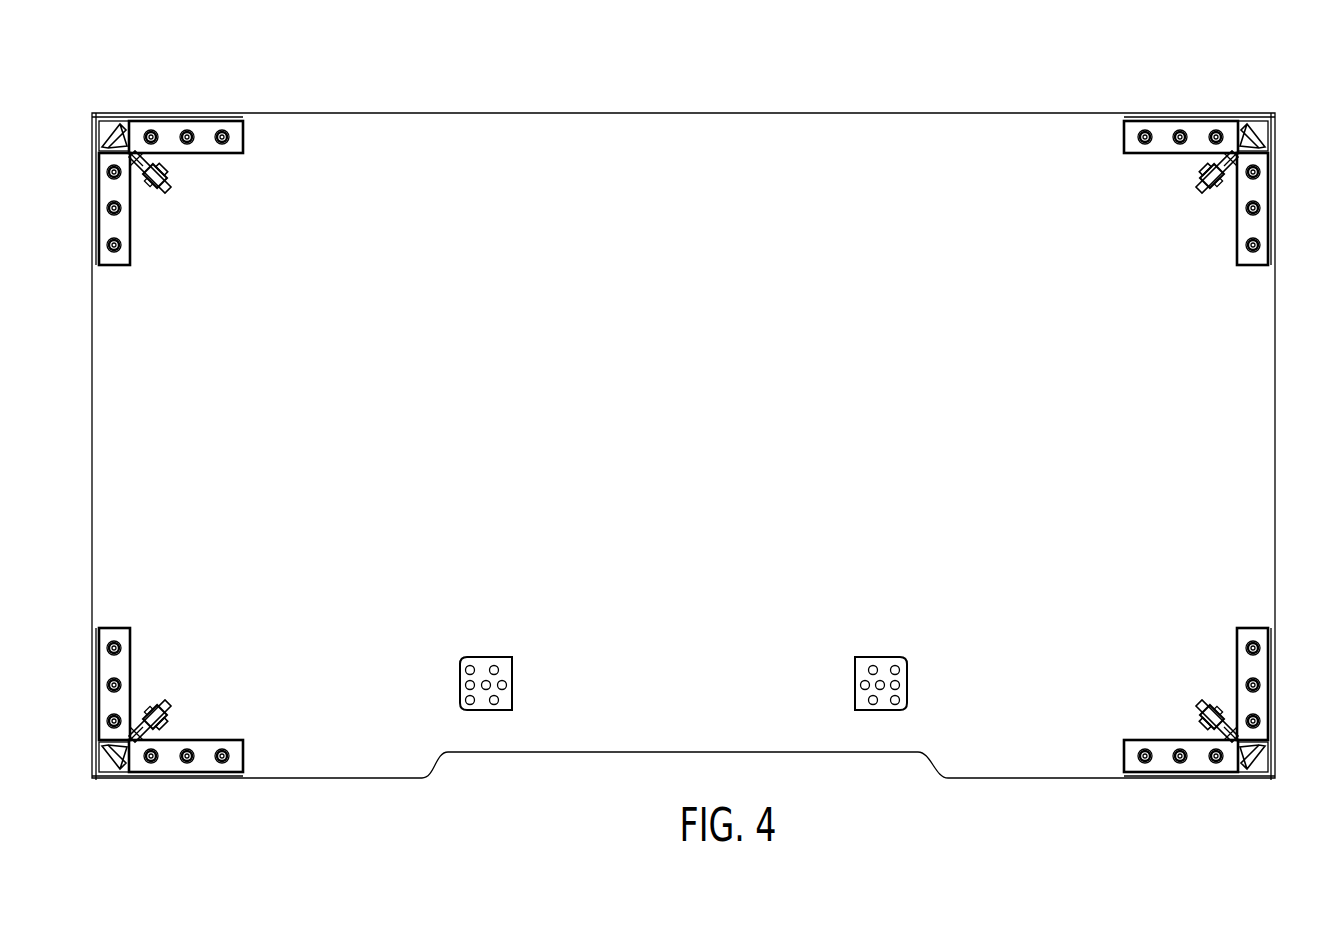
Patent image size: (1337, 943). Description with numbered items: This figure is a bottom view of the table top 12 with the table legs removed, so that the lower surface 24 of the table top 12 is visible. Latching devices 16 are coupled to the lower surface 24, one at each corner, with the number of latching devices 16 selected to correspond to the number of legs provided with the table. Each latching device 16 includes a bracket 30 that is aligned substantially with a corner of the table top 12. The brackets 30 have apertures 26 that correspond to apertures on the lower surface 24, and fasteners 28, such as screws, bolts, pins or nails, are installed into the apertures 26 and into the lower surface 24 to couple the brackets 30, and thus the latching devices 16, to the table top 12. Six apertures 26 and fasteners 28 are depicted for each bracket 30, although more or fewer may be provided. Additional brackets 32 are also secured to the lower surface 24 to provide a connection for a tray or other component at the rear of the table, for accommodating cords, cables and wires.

The table top 12 is at (704, 425).
The latching device 16 is at (174, 704).
The lower surface 24 is at (850, 177).
The apertures 26 is at (1260, 720).
The fasteners 28 is at (224, 760).
The bracket 30 is at (118, 665).
The additional brackets 32 is at (512, 685).